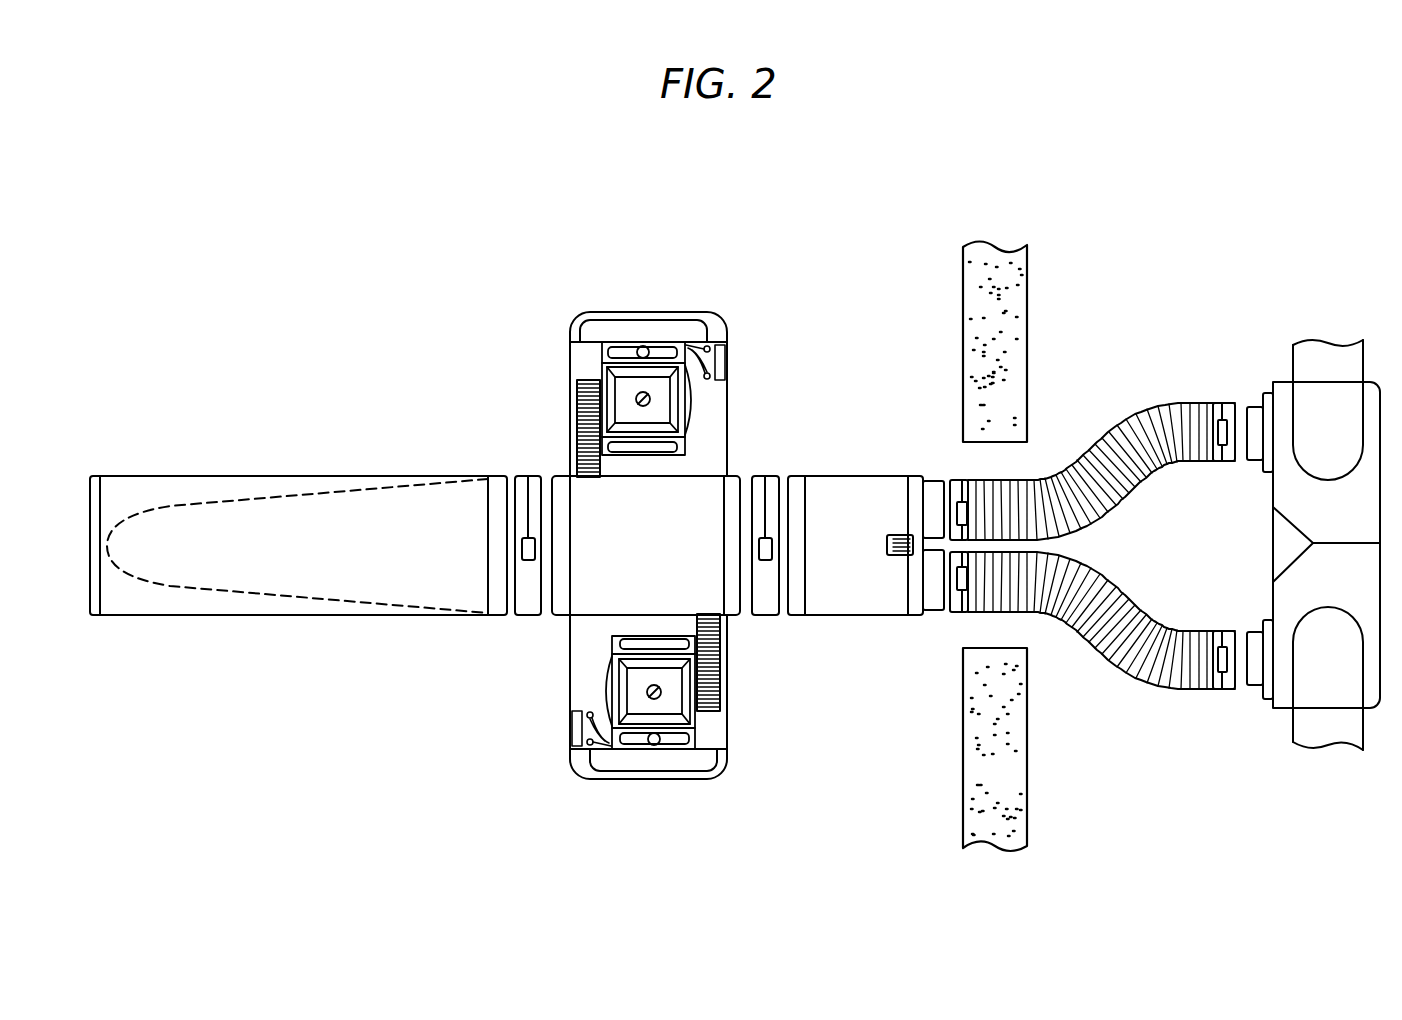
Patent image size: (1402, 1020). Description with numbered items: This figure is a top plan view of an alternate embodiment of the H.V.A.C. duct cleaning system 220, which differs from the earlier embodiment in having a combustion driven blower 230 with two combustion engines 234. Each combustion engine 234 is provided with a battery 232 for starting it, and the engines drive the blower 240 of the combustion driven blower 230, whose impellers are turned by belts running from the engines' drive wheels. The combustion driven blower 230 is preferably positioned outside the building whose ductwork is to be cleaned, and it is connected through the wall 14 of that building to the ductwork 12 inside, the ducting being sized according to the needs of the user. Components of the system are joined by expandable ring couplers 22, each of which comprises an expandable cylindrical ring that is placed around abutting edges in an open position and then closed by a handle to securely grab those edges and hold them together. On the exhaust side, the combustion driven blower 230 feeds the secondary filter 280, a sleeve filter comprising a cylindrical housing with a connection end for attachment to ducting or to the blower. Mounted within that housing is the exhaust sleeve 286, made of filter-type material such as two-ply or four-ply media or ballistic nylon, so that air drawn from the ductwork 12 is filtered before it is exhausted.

The ductwork 12 is at (1272, 547).
The wall 14 is at (1027, 332).
The expandable ring coupler 22 is at (528, 476).
The H.V.A.C. duct cleaning system 220 is at (283, 384).
The combustion driven blower 230 is at (820, 380).
The battery 232 is at (728, 362).
The combustion engine 234 is at (656, 367).
The blower 240 is at (584, 620).
The secondary filter 280 is at (345, 682).
The exhaust sleeve 286 is at (200, 590).